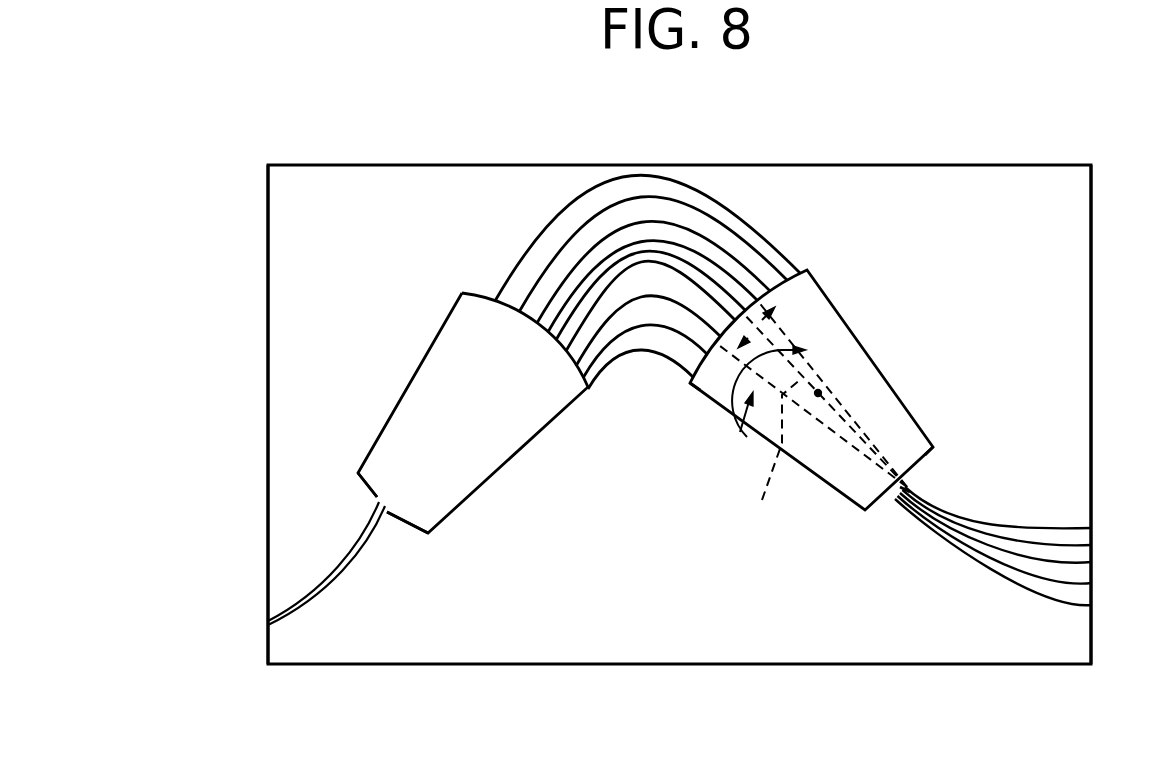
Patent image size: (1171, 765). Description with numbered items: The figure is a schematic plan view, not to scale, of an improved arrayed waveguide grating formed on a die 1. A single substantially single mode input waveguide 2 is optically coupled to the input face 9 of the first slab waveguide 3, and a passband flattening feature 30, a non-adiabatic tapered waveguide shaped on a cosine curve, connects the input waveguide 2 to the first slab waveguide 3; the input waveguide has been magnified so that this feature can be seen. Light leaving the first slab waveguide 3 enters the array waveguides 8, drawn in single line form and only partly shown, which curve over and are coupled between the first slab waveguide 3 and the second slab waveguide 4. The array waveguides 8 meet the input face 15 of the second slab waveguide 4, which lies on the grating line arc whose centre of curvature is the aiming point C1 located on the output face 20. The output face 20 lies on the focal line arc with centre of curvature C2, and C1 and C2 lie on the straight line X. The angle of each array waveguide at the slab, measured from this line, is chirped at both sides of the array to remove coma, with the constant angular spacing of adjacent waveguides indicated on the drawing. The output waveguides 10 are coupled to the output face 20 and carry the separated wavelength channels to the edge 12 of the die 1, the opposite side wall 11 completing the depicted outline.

The die 1 is at (960, 153).
The input waveguide 2 is at (340, 565).
The first slab waveguide 3 is at (422, 360).
The second slab waveguide 4 is at (858, 343).
The array waveguides 8 is at (498, 225).
The input face 9 is at (360, 490).
The output waveguides 10 is at (962, 568).
The left housing wall 11 is at (268, 443).
The edge of the die 12 is at (1093, 352).
The input face 15 is at (690, 378).
The output face 20 is at (933, 452).
The passband flattening feature 30 is at (388, 516).
The aiming point C1 is at (910, 484).
The centre of curvature C2 is at (822, 392).